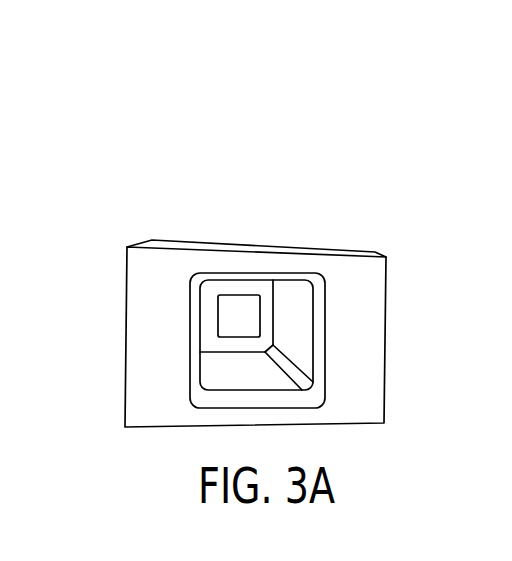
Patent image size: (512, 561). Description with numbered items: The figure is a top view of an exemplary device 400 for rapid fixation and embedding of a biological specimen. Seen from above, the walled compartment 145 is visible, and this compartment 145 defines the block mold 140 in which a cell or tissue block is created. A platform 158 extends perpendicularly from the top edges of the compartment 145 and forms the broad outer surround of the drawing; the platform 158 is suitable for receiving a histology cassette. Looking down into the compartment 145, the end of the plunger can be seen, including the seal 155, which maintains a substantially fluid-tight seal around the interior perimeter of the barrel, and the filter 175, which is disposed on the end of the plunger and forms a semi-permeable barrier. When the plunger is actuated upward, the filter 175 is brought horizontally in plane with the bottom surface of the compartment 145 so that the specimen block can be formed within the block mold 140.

The device 400 is at (246, 273).
The platform 158 is at (133, 406).
The block mold 140 is at (318, 305).
The walled compartment 145 is at (324, 370).
The filter 175 is at (252, 305).
The seal 155 is at (238, 287).